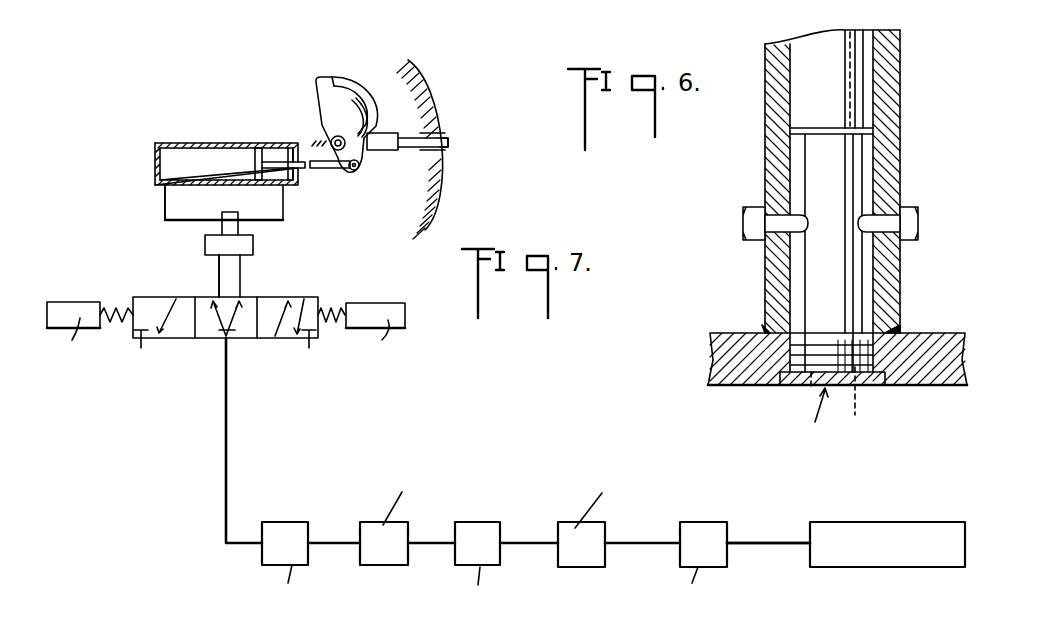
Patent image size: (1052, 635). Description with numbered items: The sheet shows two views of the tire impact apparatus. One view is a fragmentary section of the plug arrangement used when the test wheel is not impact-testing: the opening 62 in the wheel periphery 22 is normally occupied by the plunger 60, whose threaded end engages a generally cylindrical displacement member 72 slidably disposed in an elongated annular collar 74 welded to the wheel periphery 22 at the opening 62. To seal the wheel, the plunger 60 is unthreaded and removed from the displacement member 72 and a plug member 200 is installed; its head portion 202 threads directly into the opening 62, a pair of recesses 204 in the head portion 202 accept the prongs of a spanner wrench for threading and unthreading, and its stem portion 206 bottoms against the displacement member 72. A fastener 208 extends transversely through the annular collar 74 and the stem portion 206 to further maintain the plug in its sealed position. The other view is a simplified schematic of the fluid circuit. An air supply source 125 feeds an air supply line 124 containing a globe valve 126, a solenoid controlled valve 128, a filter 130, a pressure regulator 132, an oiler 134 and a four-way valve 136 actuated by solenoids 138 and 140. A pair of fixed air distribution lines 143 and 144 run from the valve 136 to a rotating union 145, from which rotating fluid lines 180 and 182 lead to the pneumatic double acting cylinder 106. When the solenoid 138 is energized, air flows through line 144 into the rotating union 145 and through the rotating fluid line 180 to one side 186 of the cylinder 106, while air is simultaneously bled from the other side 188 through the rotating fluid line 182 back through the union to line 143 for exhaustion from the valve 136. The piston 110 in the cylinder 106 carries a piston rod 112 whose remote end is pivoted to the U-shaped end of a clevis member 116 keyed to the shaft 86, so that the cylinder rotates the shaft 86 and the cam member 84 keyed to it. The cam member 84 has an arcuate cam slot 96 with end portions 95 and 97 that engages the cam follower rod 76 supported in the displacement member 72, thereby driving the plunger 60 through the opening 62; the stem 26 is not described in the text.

In FIG. 7, the wheel periphery 22 is at (443, 116).
In FIG. 7, the stem 26 is at (228, 214).
In FIG. 7, the plunger 60 is at (449, 143).
In FIG. 7, the opening 62 is at (447, 150).
In FIG. 6, the opening 62 is at (887, 331).
In FIG. 7, the displacement member 72 is at (390, 132).
In FIG. 6, the displacement member 72 is at (861, 92).
In FIG. 6, the annular collar 74 is at (766, 144).
In FIG. 7, the cam follower rod 76 is at (380, 134).
In FIG. 7, the cam member 84 is at (316, 88).
In FIG. 7, the shaft 86 is at (333, 139).
In FIG. 7, the end portion of cam slot 95 is at (359, 133).
In FIG. 7, the arcuate cam slot 96 is at (349, 80).
In FIG. 7, the end portion of cam slot 97 is at (327, 77).
In FIG. 7, the pneumatic double acting cylinder 106 is at (178, 145).
In FIG. 7, the piston 110 is at (258, 146).
In FIG. 7, the piston rod 112 is at (330, 170).
In FIG. 7, the clevis member 116 is at (362, 163).
In FIG. 7, the air supply line 124 is at (767, 546).
In FIG. 7, the air supply source 125 is at (870, 522).
In FIG. 7, the globe valve 126 is at (703, 528).
In FIG. 7, the solenoid controlled valve 128 is at (572, 562).
In FIG. 7, the filter 130 is at (477, 528).
In FIG. 7, the pressure regulator 132 is at (375, 563).
In FIG. 7, the oiler 134 is at (288, 528).
In FIG. 7, the valve 136 is at (220, 338).
In FIG. 7, the solenoid 138 is at (383, 310).
In FIG. 7, the solenoid 140 is at (85, 305).
In FIG. 7, the fixed air distribution line 143 is at (217, 275).
In FIG. 7, the fixed air distribution line 144 is at (244, 280).
In FIG. 7, the rotating union 145 is at (253, 246).
In FIG. 7, the rotating fluid line 180 is at (284, 216).
In FIG. 7, the rotating fluid line 182 is at (165, 210).
In FIG. 7, the side of pneumatic cylinder 186 is at (275, 145).
In FIG. 7, the side of pneumatic cylinder 188 is at (164, 145).
In FIG. 6, the plug member 200 is at (813, 417).
In FIG. 6, the head portion 202 is at (868, 378).
In FIG. 6, the recesses 204 is at (810, 387).
In FIG. 6, the stem portion 206 is at (855, 162).
In FIG. 6, the fastener 208 is at (945, 200).